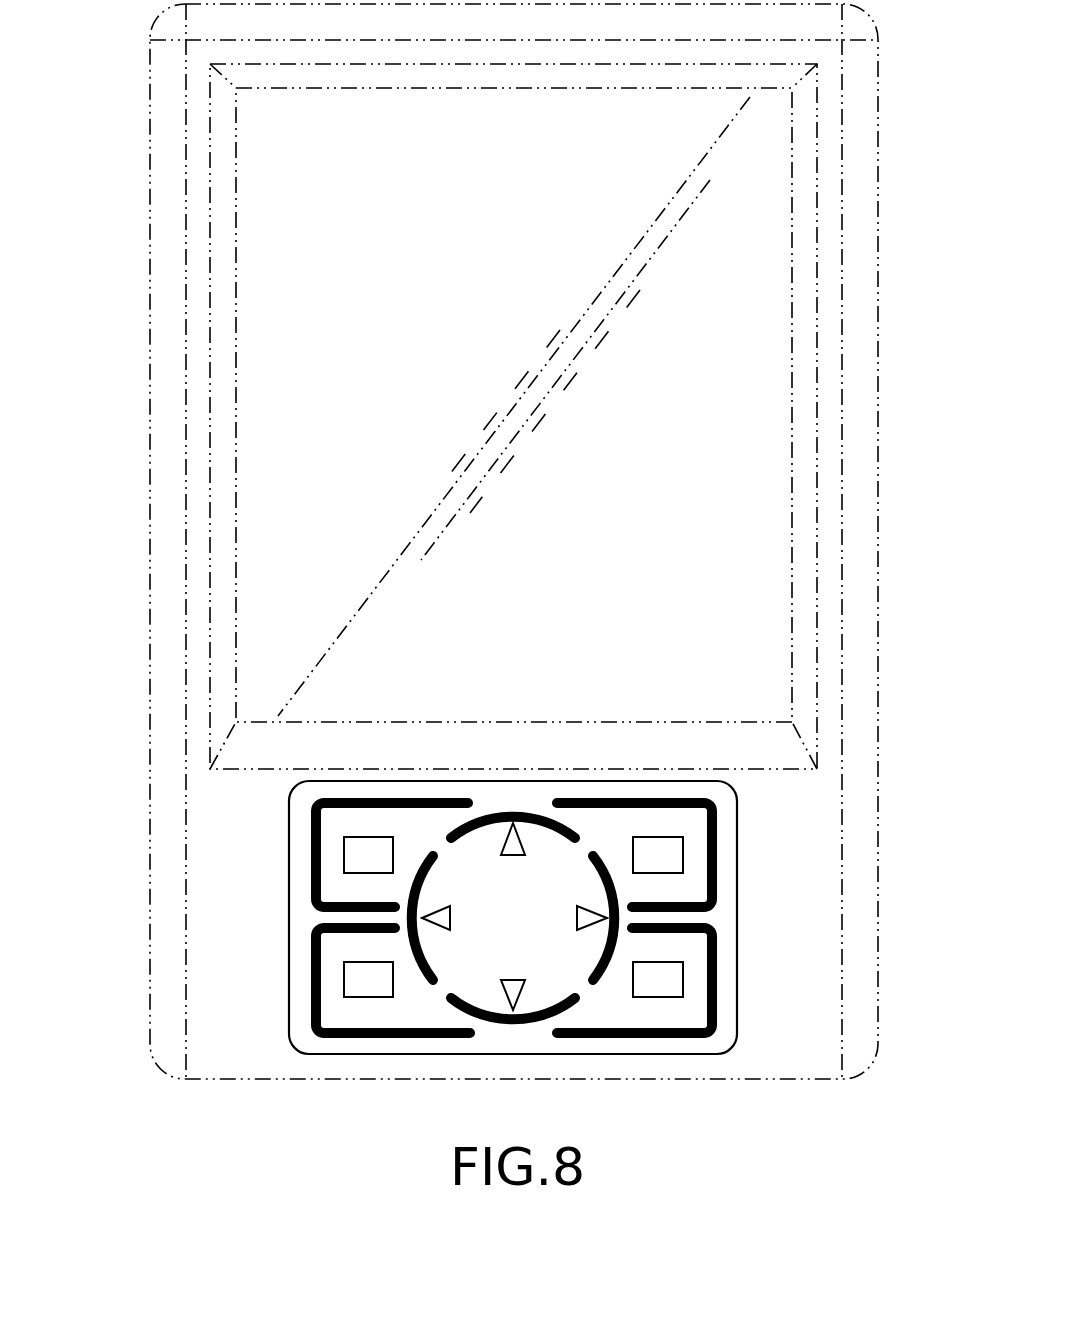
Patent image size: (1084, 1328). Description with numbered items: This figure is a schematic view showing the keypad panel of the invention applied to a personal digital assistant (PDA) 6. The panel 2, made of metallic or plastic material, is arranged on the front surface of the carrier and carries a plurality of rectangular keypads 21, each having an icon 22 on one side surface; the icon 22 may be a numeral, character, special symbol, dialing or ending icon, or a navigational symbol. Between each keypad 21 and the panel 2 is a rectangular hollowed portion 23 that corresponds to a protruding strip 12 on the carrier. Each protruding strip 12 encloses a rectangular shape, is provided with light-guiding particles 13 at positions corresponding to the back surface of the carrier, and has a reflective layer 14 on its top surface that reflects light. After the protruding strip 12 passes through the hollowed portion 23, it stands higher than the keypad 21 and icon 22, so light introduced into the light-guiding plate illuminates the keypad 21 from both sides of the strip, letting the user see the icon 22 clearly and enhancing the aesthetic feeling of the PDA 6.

The panel 2 is at (537, 946).
The personal digital assistant (PDA) 6 is at (164, 603).
The protruding strip 12 is at (639, 957).
The light-guiding particles 13 is at (759, 939).
The reflective layer 14 is at (759, 939).
The keypad 21 is at (658, 972).
The icon 22 is at (698, 921).
The hollowed portion 23 is at (759, 960).